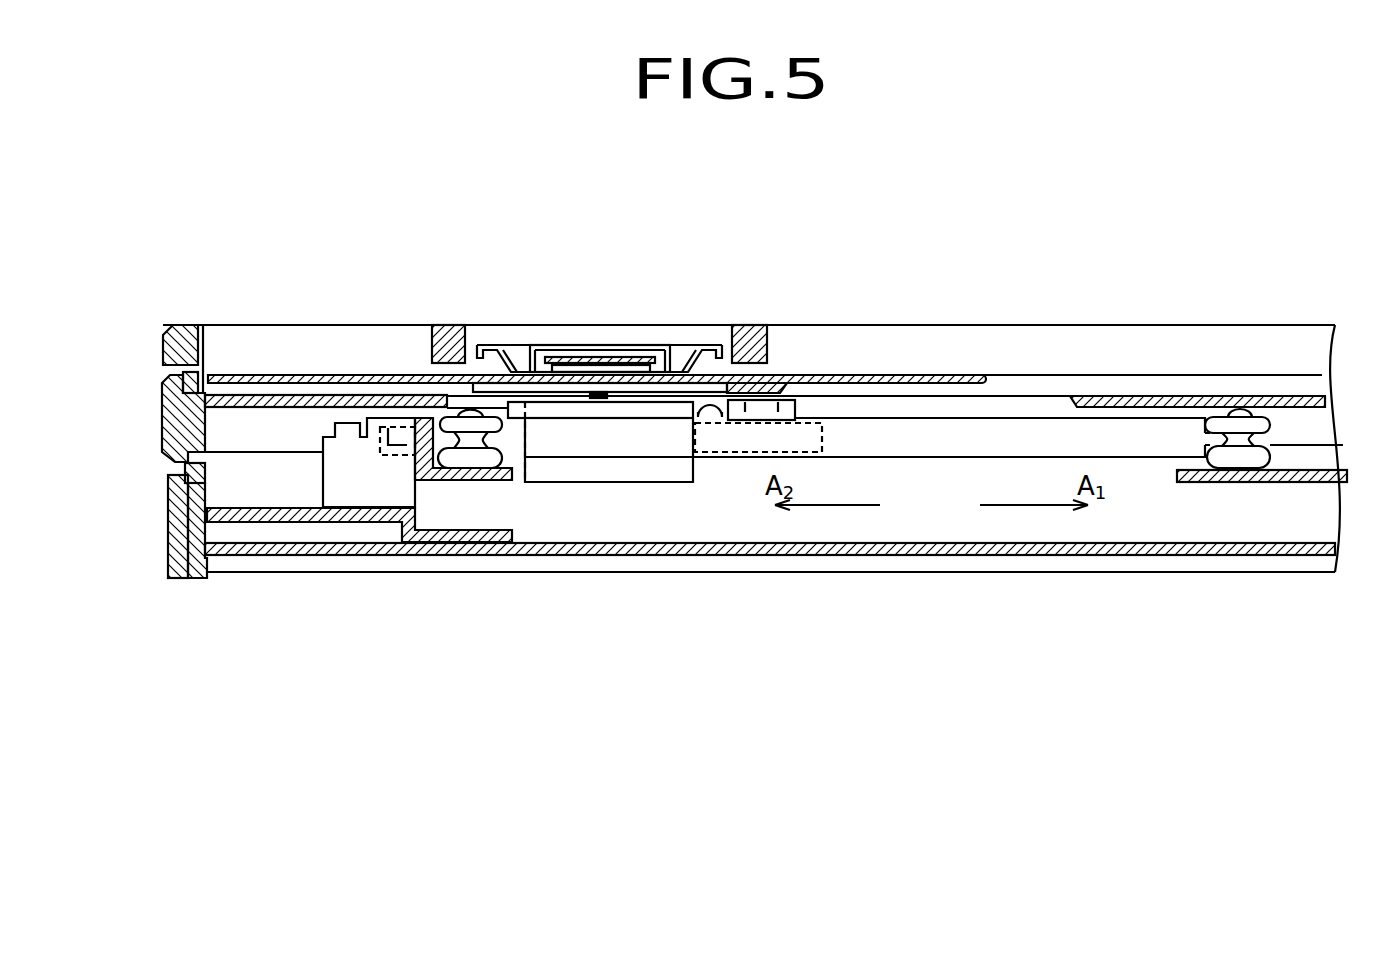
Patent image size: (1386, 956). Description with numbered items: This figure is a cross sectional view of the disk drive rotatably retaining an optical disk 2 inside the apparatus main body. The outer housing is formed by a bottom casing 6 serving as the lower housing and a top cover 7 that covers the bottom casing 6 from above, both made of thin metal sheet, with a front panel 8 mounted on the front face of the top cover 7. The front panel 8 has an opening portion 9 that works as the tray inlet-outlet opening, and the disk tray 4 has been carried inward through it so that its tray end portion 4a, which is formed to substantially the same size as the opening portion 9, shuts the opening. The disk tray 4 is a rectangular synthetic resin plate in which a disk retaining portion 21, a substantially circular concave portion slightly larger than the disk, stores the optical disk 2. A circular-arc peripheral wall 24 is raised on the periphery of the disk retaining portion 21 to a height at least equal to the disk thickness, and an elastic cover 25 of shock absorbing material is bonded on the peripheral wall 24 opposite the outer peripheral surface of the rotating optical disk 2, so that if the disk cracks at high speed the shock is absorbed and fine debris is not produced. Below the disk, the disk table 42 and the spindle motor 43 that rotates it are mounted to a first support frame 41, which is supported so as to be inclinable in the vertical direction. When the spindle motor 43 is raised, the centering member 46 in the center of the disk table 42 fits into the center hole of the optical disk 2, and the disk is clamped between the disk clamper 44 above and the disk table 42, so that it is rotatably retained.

The optical disk 2 is at (315, 374).
The disk tray 4 is at (267, 374).
The tray end portion 4a is at (162, 415).
The bottom casing 6 is at (1123, 574).
The top cover 7 is at (1073, 325).
The front panel 8 is at (165, 578).
The opening portion 9 is at (175, 472).
The disk retaining portion 21 is at (388, 394).
The peripheral wall 24 is at (170, 374).
The elastic cover 25 is at (200, 372).
The first support frame 41 is at (935, 445).
The disk table 42 is at (623, 372).
The spindle motor 43 is at (601, 470).
The disk clamper 44 is at (556, 347).
The centering member 46 is at (592, 357).